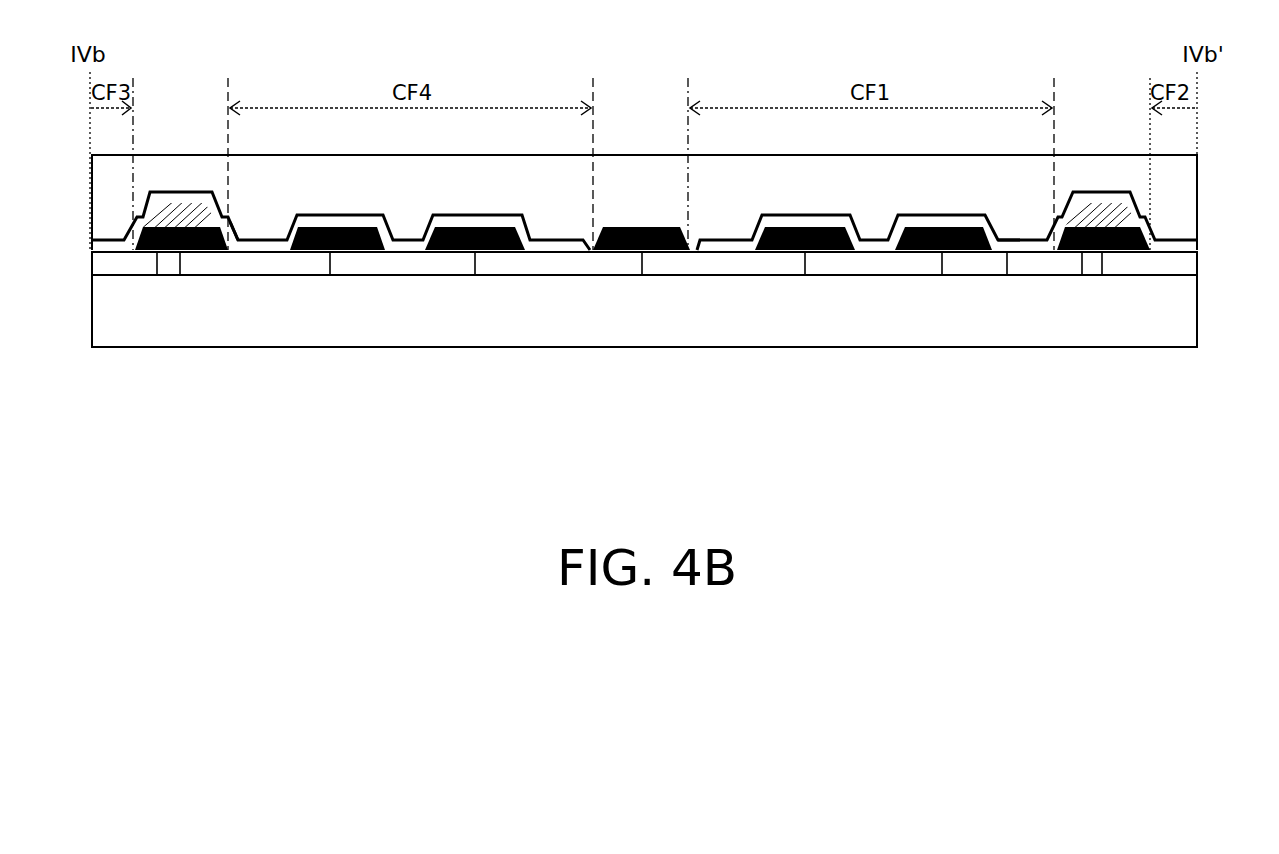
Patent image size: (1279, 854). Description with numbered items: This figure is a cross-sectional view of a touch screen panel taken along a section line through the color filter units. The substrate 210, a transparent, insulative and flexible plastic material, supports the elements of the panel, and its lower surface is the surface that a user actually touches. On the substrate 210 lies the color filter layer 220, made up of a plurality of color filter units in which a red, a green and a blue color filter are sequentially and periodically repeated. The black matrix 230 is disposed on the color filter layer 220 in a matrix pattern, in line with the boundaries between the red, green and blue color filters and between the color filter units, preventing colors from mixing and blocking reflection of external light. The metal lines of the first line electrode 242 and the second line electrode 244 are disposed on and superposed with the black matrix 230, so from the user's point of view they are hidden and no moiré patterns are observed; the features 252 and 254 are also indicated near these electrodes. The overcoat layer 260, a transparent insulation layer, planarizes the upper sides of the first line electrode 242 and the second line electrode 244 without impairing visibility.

The substrate 210 is at (1158, 313).
The color filter layer 220 is at (1186, 265).
The black matrix 230 is at (348, 253).
The first line electrode 242 is at (1080, 275).
The second line electrode 244 is at (155, 275).
The second step portion 252 is at (1010, 240).
The first step portion 254 is at (238, 245).
The overcoat layer 260 is at (1158, 186).